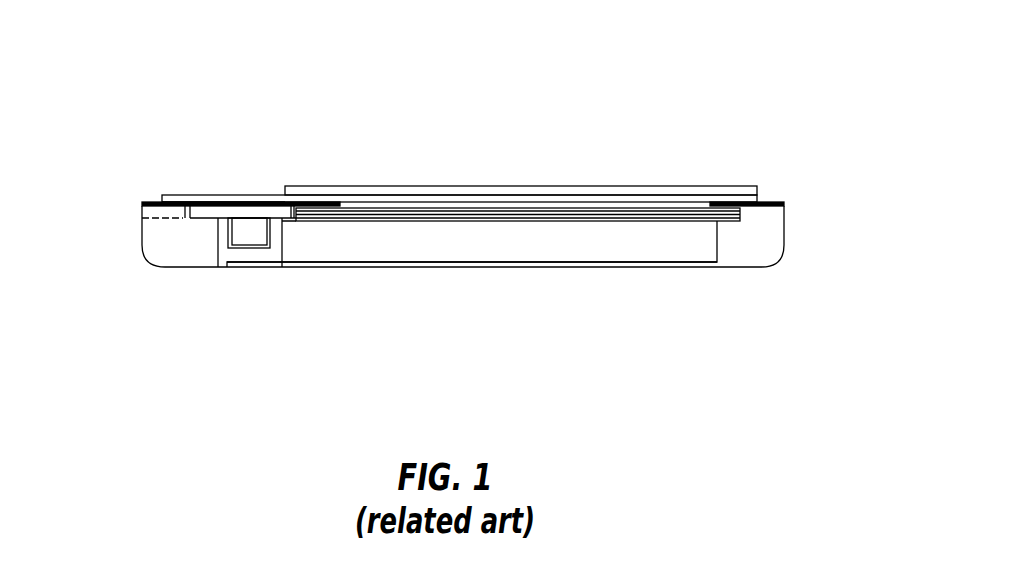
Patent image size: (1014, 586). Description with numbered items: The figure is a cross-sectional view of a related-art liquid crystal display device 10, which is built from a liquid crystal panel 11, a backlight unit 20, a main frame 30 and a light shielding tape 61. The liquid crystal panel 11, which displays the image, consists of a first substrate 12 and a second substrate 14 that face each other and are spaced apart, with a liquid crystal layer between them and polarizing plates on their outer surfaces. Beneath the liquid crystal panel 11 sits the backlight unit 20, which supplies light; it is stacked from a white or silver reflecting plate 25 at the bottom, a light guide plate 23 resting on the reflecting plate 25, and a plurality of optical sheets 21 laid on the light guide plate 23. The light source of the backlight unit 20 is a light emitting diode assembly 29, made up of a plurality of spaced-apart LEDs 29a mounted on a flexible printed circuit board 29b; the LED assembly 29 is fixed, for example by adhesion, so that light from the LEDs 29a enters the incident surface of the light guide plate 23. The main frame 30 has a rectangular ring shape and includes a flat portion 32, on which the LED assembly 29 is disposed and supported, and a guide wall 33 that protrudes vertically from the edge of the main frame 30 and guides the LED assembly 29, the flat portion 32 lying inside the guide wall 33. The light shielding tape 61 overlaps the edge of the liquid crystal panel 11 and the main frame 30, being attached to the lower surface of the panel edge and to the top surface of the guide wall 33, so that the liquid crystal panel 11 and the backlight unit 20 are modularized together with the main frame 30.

The liquid crystal display device 10 is at (703, 95).
The liquid crystal panel 11 is at (603, 132).
The first substrate 12 is at (625, 192).
The second substrate 14 is at (592, 194).
The light shielding tape 61 is at (269, 203).
The main frame 30 is at (47, 208).
The flat portion 32 is at (197, 223).
The guide wall 33 is at (150, 210).
The backlight unit 20 is at (483, 370).
The optical sheets 21 is at (469, 226).
The light guide plate 23 is at (397, 245).
The reflecting plate 25 is at (342, 265).
The light emitting diode assembly 29 is at (245, 370).
The light emitting diodes 29a is at (255, 242).
The flexible printed circuit board 29b is at (248, 212).